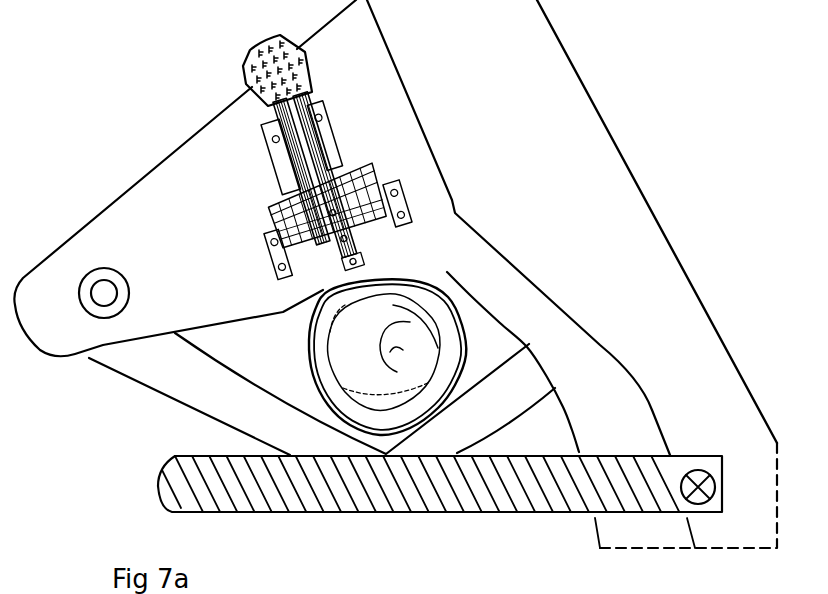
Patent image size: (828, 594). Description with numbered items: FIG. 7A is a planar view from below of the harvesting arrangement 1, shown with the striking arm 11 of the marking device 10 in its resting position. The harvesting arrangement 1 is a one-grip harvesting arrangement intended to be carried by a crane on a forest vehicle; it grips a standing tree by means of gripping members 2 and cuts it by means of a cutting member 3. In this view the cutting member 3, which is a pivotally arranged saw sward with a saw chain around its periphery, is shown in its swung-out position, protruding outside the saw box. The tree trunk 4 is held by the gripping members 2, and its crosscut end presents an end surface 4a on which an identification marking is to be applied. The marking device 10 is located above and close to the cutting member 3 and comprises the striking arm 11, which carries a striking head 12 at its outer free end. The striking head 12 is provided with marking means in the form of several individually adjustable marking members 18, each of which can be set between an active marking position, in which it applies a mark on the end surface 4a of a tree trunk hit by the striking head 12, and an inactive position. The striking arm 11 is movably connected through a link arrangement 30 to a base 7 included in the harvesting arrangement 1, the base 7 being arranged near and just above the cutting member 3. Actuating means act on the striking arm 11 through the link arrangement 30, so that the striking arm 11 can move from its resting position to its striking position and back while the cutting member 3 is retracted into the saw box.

The harvesting arrangement 1 is at (600, 63).
The gripping members 2 is at (171, 428).
The cutting member 3 is at (333, 498).
The tree trunk 4 is at (432, 296).
The end surface 4a is at (355, 370).
The base 7 is at (182, 188).
The marking device 10 is at (307, 175).
The striking arm 11 is at (315, 140).
The striking head 12 is at (252, 62).
The marking members 18 is at (270, 46).
The link arrangement 30 is at (318, 262).